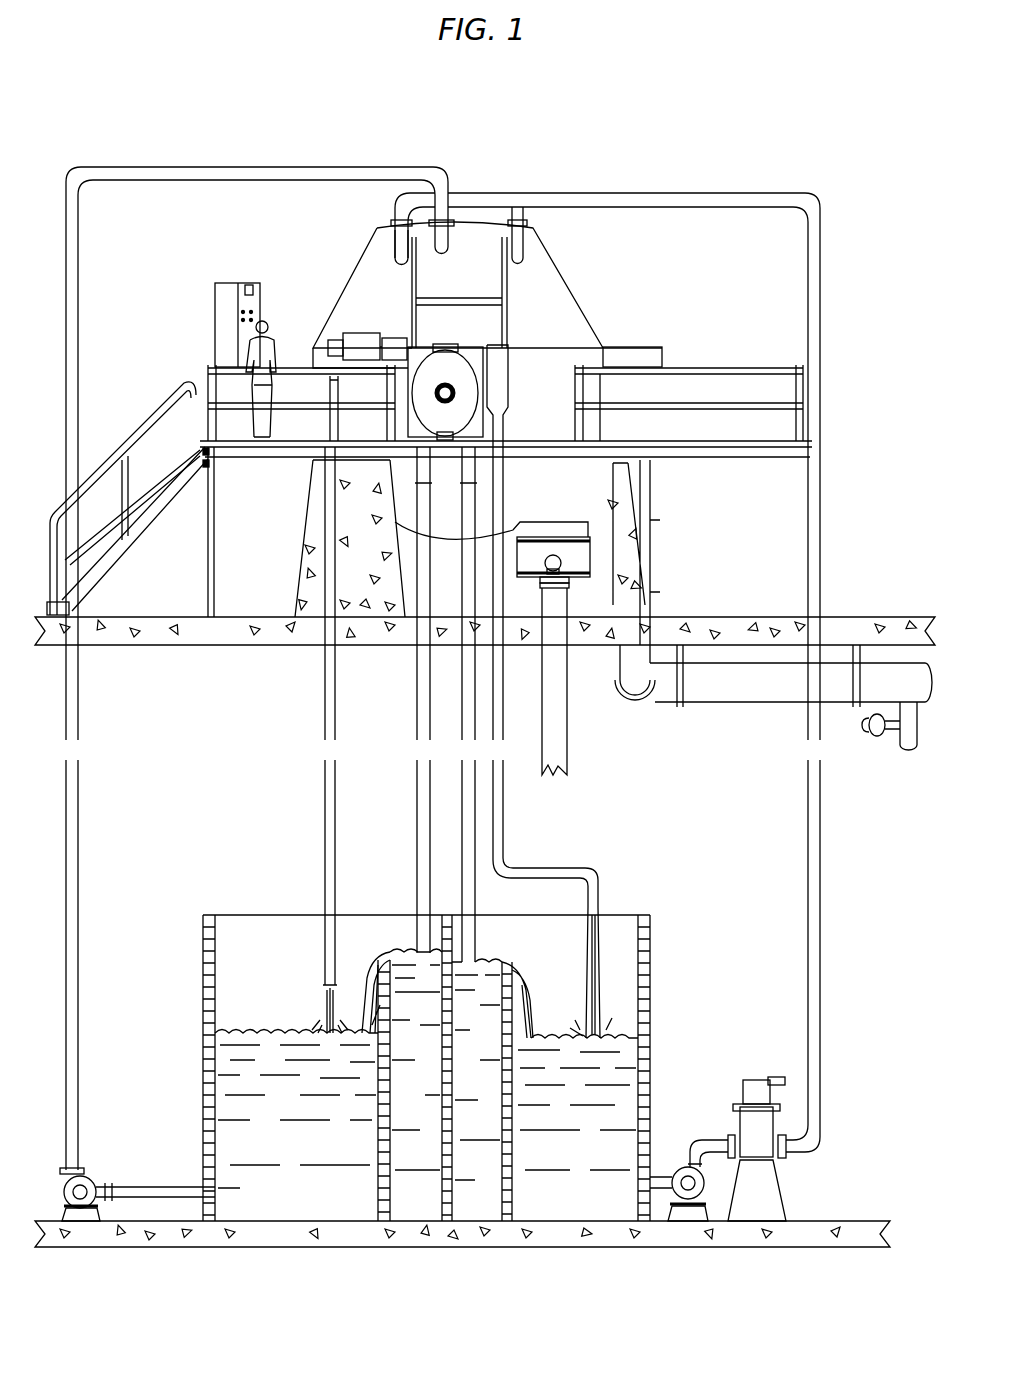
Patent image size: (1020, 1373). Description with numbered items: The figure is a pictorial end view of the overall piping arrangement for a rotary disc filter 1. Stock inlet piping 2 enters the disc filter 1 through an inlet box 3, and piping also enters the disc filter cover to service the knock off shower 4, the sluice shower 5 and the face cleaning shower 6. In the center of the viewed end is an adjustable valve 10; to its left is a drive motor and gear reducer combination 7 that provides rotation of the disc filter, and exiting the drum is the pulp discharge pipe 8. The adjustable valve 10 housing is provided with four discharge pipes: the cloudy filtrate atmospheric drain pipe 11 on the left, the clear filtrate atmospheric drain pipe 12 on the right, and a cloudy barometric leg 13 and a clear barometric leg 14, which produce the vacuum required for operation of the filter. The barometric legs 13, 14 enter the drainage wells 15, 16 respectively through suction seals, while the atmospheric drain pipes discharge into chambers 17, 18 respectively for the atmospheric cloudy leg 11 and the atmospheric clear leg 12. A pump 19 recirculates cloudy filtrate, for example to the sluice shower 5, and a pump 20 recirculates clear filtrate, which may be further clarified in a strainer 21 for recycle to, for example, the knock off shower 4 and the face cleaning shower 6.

The disc filter 1 is at (350, 295).
The stock inlet piping 2 is at (672, 705).
The inlet box 3 is at (662, 352).
The knock off shower 4 is at (523, 247).
The sluice shower 5 is at (448, 232).
The face cleaning shower 6 is at (397, 252).
The drive motor and gear reducer combination 7 is at (358, 335).
The pulp discharge pipe 8 is at (567, 743).
The adjustable valve 10 is at (440, 352).
The cloudy filtrate atmospheric drain pipe 11 is at (323, 690).
The clear filtrate atmospheric drain pipe 12 is at (505, 820).
The cloudy barometric leg 13 is at (417, 794).
The clear barometric leg 14 is at (462, 803).
The drainage well 15 is at (422, 1208).
The drainage well 16 is at (480, 1208).
The chamber 17 is at (295, 1208).
The chamber 18 is at (580, 1208).
The pump 19 is at (88, 1180).
The pump 20 is at (695, 1168).
The strainer 21 is at (740, 1122).